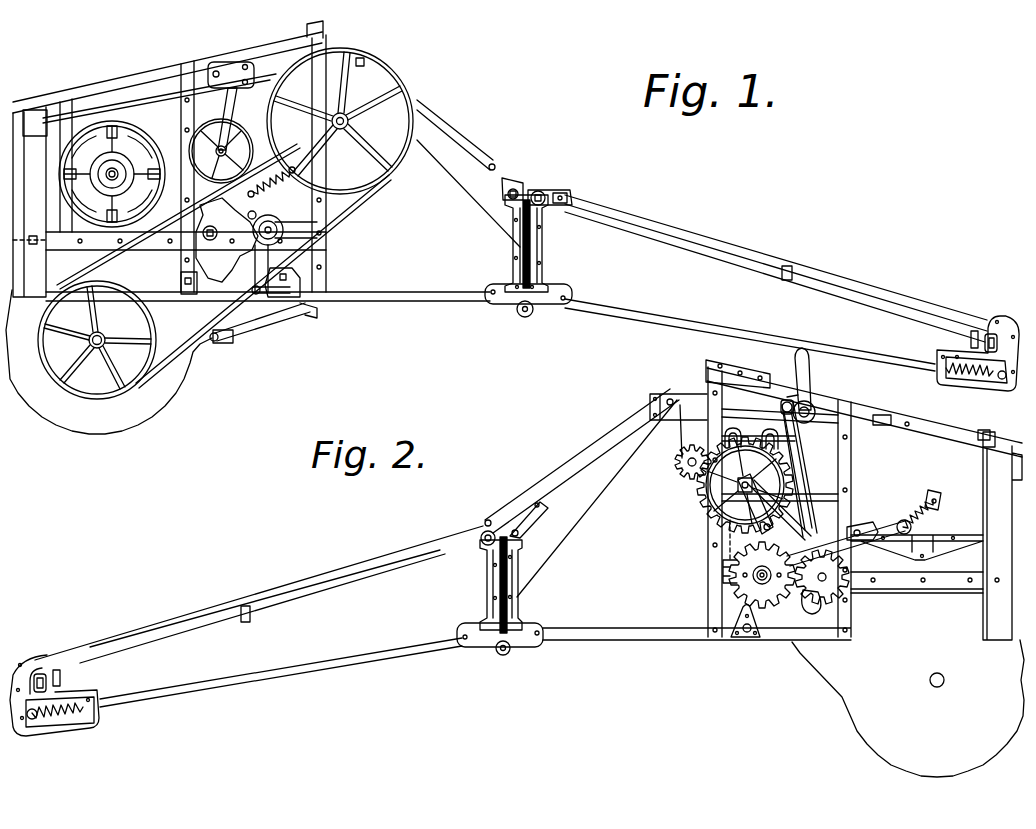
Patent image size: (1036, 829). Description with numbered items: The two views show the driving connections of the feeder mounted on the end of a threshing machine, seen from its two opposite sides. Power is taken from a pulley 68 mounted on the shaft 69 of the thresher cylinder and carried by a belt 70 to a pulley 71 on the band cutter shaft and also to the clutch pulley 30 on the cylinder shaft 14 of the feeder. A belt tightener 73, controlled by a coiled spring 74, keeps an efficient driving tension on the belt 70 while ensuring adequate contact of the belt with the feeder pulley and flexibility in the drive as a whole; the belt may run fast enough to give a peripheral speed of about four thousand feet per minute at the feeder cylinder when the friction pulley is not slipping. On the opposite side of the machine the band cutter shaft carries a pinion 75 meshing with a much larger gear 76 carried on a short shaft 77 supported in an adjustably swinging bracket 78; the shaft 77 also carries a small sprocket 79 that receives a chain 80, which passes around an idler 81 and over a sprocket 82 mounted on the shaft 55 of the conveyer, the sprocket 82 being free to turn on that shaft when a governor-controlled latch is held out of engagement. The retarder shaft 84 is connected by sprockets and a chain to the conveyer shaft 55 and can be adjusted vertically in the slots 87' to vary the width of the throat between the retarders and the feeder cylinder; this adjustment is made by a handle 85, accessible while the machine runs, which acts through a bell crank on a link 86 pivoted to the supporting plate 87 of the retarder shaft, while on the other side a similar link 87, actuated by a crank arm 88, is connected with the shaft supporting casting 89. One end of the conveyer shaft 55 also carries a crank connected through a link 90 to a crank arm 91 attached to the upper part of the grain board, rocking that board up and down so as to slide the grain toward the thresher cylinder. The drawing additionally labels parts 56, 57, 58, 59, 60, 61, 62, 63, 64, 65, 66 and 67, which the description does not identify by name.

In FIG. 1, the cylinder shaft 14 is at (103, 163).
In FIG. 1, the clutch pulley 30 is at (134, 136).
In FIG. 1, the conveyer shaft 55 is at (283, 230).
In FIG. 2, the conveyer shaft 55 is at (752, 580).
In FIG. 1, the lower bar 56 is at (750, 321).
In FIG. 1, the bolt 57 is at (520, 310).
In FIG. 1, the rod 58 is at (518, 247).
In FIG. 1, the tie rod 59 is at (508, 207).
In FIG. 1, the bracket plate 60 is at (542, 246).
In FIG. 1, the bolt 61 is at (547, 192).
In FIG. 1, the bolt 62 is at (516, 178).
In FIG. 1, the upper bar 63 is at (680, 230).
In FIG. 1, the plate 64 is at (540, 180).
In FIG. 1, the end box 65 is at (1007, 336).
In FIG. 1, the bracket 66 is at (567, 193).
In FIG. 1, the bracket arm 67 is at (503, 185).
In FIG. 2, the bracket arm 67 is at (530, 526).
In FIG. 1, the pulley 68 is at (128, 295).
In FIG. 1, the shaft of the thresher cylinder 69 is at (97, 348).
In FIG. 1, the belt 70 is at (173, 357).
In FIG. 1, the pulley 71 is at (350, 62).
In FIG. 1, the belt tightener 73 is at (247, 131).
In FIG. 1, the coiled spring 74 is at (275, 190).
In FIG. 2, the pinion 75 is at (680, 465).
In FIG. 2, the gear 76 is at (702, 510).
In FIG. 2, the short shaft 77 is at (803, 470).
In FIG. 2, the adjustably swinging bracket 78 is at (763, 433).
In FIG. 2, the small sprocket 79 is at (733, 507).
In FIG. 2, the chain 80 is at (720, 560).
In FIG. 2, the idler 81 is at (779, 510).
In FIG. 2, the sprocket 82 is at (773, 605).
In FIG. 1, the retarder shaft 84 is at (203, 235).
In FIG. 2, the retarder shaft 84 is at (835, 582).
In FIG. 2, the handle 85 is at (805, 373).
In FIG. 2, the link 86 is at (797, 447).
In FIG. 1, the supporting plate 87 is at (246, 115).
In FIG. 2, the supporting plate 87 is at (864, 525).
In FIG. 2, the slots 87' is at (801, 613).
In FIG. 1, the crank arm 88 is at (236, 62).
In FIG. 1, the shaft supporting casting 89 is at (194, 290).
In FIG. 1, the link 90 is at (253, 263).
In FIG. 1, the crank arm 91 is at (293, 290).